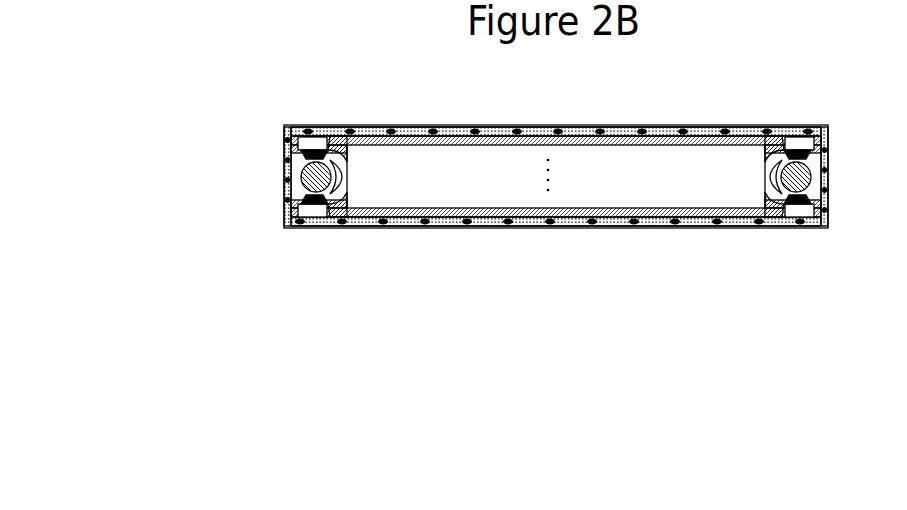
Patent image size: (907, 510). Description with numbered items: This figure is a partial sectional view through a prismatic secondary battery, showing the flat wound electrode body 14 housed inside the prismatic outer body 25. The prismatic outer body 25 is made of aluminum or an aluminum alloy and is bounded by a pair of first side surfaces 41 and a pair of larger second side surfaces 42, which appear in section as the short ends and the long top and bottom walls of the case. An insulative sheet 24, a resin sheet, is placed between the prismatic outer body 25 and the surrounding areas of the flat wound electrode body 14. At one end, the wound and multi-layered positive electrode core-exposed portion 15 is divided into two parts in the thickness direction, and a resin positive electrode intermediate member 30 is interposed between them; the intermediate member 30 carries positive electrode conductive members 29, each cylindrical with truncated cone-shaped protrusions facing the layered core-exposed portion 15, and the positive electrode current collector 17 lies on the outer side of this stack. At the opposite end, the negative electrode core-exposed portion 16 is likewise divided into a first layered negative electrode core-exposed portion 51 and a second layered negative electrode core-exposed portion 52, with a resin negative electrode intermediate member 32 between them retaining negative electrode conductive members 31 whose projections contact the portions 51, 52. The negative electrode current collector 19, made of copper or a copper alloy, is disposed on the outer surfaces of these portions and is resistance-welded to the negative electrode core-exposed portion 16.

The flat wound electrode body 14 is at (679, 150).
The positive electrode core-exposed portion 15 is at (780, 157).
The negative electrode core-exposed portion 16 is at (343, 160).
The positive electrode current collector 17 is at (820, 133).
The negative electrode current collector 19 is at (287, 128).
The insulative sheet 24 is at (500, 130).
The prismatic outer body 25 is at (458, 126).
The positive electrode conductive member 29 is at (826, 152).
The positive electrode intermediate member 30 is at (826, 173).
The negative electrode conductive member 31 is at (296, 158).
The negative electrode intermediate member 32 is at (297, 177).
The first side surfaces 41 is at (287, 205).
The second side surfaces 42 is at (592, 128).
The first layered negative electrode core-exposed portion 51 is at (331, 212).
The second layered negative electrode core-exposed portion 52 is at (335, 145).